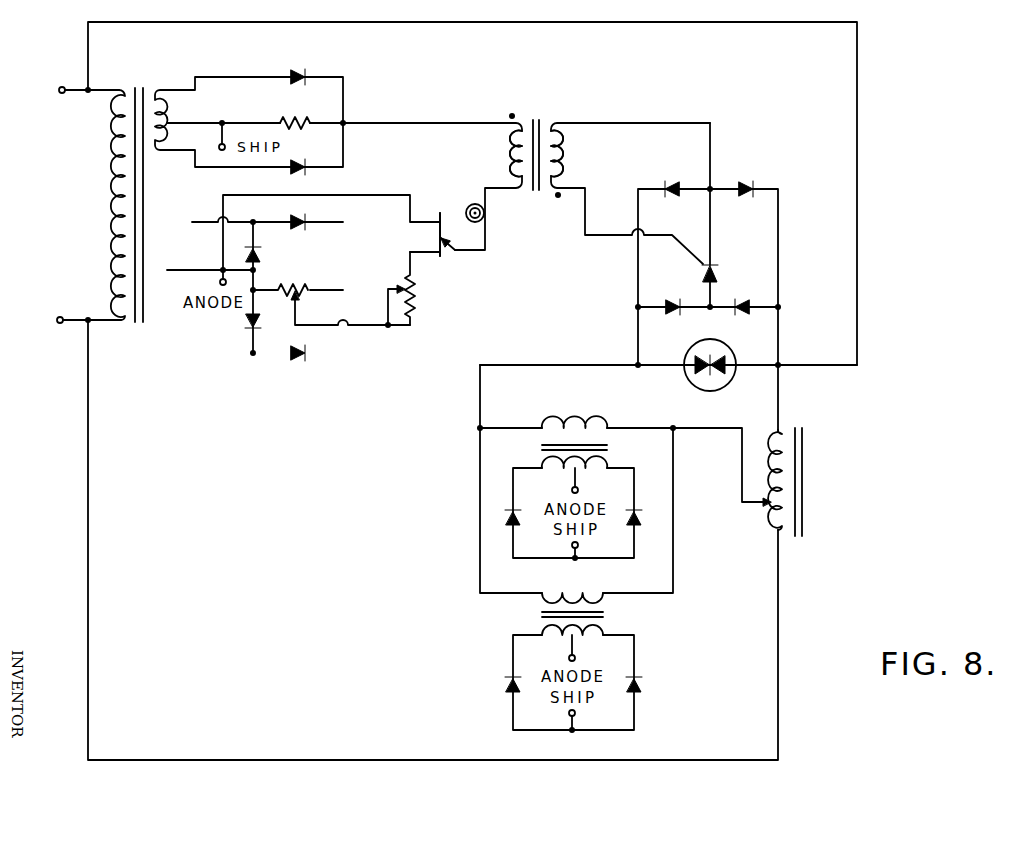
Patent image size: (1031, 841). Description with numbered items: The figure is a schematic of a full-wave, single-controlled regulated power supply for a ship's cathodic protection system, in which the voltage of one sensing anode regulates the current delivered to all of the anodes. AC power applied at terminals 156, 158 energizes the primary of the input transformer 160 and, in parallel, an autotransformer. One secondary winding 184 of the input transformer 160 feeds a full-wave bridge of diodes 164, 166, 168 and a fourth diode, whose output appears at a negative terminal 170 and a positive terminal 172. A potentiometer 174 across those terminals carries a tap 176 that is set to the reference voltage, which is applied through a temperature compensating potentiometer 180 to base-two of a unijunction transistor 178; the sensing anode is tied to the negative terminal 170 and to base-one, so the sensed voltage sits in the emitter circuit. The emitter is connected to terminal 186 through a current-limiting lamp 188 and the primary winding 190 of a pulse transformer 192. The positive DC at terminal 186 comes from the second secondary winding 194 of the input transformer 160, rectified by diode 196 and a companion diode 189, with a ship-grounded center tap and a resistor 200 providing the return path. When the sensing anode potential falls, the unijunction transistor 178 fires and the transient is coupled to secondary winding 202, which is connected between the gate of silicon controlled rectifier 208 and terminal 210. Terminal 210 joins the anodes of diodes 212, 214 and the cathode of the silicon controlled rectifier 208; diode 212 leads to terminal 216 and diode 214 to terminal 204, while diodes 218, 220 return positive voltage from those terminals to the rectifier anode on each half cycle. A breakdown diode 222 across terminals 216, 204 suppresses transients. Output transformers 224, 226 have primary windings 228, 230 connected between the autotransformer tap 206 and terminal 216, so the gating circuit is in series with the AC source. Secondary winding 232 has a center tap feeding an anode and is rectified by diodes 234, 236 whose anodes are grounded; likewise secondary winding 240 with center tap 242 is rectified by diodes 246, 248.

The terminal 156 is at (60, 88).
The terminal 158 is at (56, 318).
The input transformer 160 is at (140, 328).
The secondary winding 184 is at (126, 277).
The secondary winding 194 is at (168, 104).
The resistor 200 is at (295, 114).
The terminal 186 is at (346, 118).
The diode 196 is at (299, 69).
The diode 189 is at (288, 171).
The diode 164 is at (301, 219).
The diode 166 is at (246, 324).
The diode 168 is at (297, 360).
The negative terminal 170 is at (258, 289).
The positive terminal 172 is at (342, 289).
The potentiometer 174 is at (304, 298).
The tap 176 is at (298, 312).
The temperature compensating potentiometer 180 is at (417, 291).
The unijunction transistor 178 is at (447, 241).
The current-limiting lamp 188 is at (485, 216).
The primary winding 190 is at (508, 152).
The pulse transformer 192 is at (537, 116).
The secondary winding 202 is at (566, 151).
The diode 212 is at (672, 182).
The terminal 210 is at (711, 188).
The diode 214 is at (753, 186).
The silicon controlled rectifier 208 is at (714, 261).
The diode 218 is at (679, 284).
The diode 220 is at (738, 304).
The terminal 216 is at (636, 364).
The breakdown diode 222 is at (687, 374).
The terminal 204 is at (778, 366).
The primary winding 228 is at (573, 420).
The output transformer 224 is at (609, 448).
The secondary winding 232 is at (547, 475).
The diode 234 is at (506, 522).
The diode 236 is at (644, 522).
The primary winding 230 is at (580, 590).
The output transformer 226 is at (607, 614).
The secondary winding 240 is at (544, 639).
The center tap 242 is at (577, 659).
The diode 246 is at (500, 680).
The diode 248 is at (642, 683).
The tap 206 is at (763, 505).